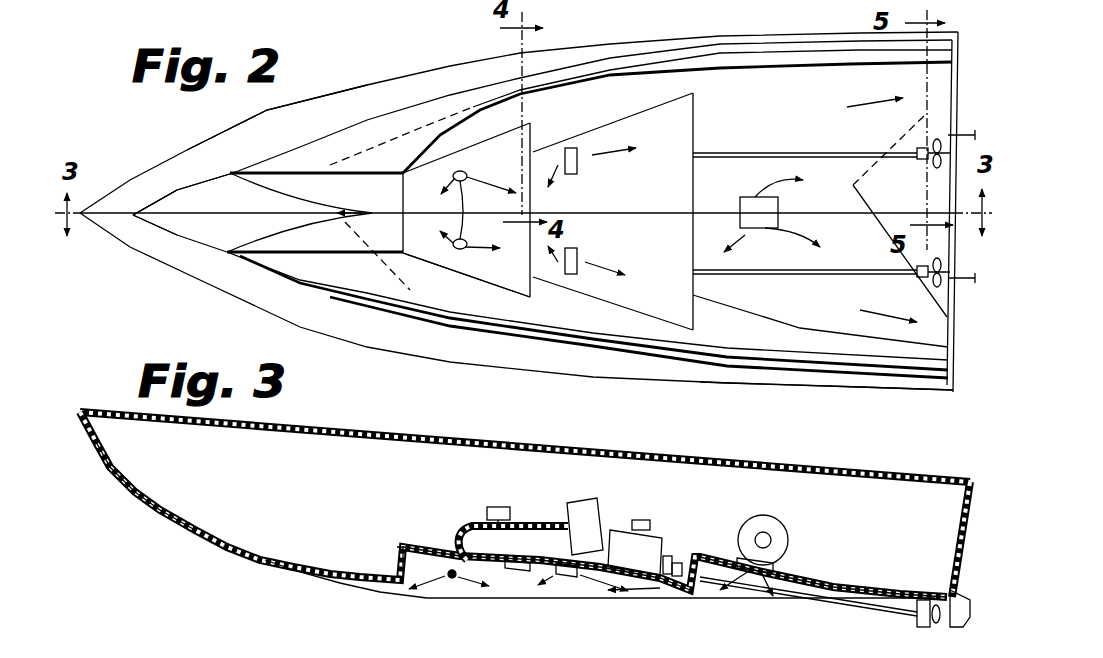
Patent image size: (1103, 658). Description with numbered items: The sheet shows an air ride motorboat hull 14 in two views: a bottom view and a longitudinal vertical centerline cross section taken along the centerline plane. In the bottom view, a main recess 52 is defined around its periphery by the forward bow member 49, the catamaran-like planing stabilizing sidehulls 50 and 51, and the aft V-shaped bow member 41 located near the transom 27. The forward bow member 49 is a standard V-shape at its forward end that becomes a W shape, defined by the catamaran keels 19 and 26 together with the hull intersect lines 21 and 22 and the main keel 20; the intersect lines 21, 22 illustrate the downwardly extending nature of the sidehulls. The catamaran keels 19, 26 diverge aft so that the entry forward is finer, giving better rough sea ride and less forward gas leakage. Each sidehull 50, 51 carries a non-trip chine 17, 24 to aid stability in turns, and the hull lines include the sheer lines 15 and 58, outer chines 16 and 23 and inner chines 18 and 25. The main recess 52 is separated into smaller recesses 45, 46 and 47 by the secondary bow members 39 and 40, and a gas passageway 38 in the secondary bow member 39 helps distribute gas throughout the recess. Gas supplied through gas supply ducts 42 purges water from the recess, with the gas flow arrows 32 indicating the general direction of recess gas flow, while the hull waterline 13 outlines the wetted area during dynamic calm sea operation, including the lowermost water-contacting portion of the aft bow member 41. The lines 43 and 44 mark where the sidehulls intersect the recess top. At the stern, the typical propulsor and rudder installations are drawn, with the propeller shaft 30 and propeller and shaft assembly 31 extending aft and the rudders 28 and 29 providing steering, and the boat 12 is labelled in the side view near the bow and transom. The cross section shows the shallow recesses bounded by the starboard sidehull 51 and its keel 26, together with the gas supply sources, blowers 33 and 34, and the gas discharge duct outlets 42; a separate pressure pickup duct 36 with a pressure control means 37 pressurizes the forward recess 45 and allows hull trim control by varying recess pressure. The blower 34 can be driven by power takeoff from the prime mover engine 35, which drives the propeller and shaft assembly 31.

In FIG. 3, the boat hull 12 is at (190, 548).
In FIG. 2, the hull waterline 13 is at (410, 290).
In FIG. 2, the hull 14 is at (313, 136).
In FIG. 2, the hull sheer line 15 is at (250, 120).
In FIG. 2, the outer chine 16 is at (177, 190).
In FIG. 2, the non-trip chine 17 is at (627, 65).
In FIG. 2, the inner chine 18 is at (603, 73).
In FIG. 2, the catamaran keel 19 is at (362, 162).
In FIG. 2, the main keel 20 is at (189, 212).
In FIG. 3, the main keel 20 is at (192, 535).
In FIG. 2, the hull intersect line 21 is at (295, 198).
In FIG. 2, the hull intersect line 22 is at (290, 225).
In FIG. 2, the outer chine 23 is at (200, 243).
In FIG. 2, the non-trip chine 24 is at (807, 377).
In FIG. 2, the inner chine 25 is at (840, 370).
In FIG. 3, the inner chine 25 is at (390, 598).
In FIG. 2, the catamaran sidehull keel 26 is at (290, 273).
In FIG. 2, the transom 27 is at (967, 110).
In FIG. 3, the transom 27 is at (972, 520).
In FIG. 2, the upper rudder 28 is at (974, 136).
In FIG. 2, the rudder 29 is at (973, 283).
In FIG. 3, the rudder 29 is at (956, 622).
In FIG. 2, the upper propeller shaft 30 is at (907, 153).
In FIG. 2, the propeller and shaft assembly 31 is at (920, 277).
In FIG. 3, the propeller and shaft assembly 31 is at (905, 616).
In FIG. 2, the gas flow arrows 32 is at (485, 255).
In FIG. 3, the gas flow arrows 32 is at (483, 592).
In FIG. 3, the blower 33 is at (785, 505).
In FIG. 3, the blower 34 is at (586, 510).
In FIG. 3, the prime mover engine 35 is at (648, 535).
In FIG. 3, the pressure pickup duct 36 is at (463, 530).
In FIG. 3, the pressure control means 37 is at (500, 507).
In FIG. 2, the gas passageway 38 is at (466, 215).
In FIG. 3, the gas passageway 38 is at (512, 572).
In FIG. 2, the secondary bow member 39 is at (507, 176).
In FIG. 3, the secondary bow member 39 is at (398, 553).
In FIG. 2, the secondary bow member 40 is at (650, 188).
In FIG. 3, the secondary bow member 40 is at (648, 590).
In FIG. 2, the aft bow member 41 is at (813, 311).
In FIG. 3, the aft bow member 41 is at (864, 597).
In FIG. 2, the gas supply duct 42 is at (580, 156).
In FIG. 3, the gas supply duct 42 is at (455, 585).
In FIG. 2, the sidehull intersect line 43 is at (487, 138).
In FIG. 2, the sidehull intersect line 44 is at (530, 297).
In FIG. 2, the forward recess 45 is at (433, 240).
In FIG. 3, the forward recess 45 is at (450, 585).
In FIG. 2, the recess 46 is at (650, 250).
In FIG. 3, the recess 46 is at (553, 576).
In FIG. 2, the recess 47 is at (813, 203).
In FIG. 2, the forward bow member 49 is at (213, 208).
In FIG. 3, the forward bow member 49 is at (343, 590).
In FIG. 2, the catamaran sidehull 50 is at (337, 171).
In FIG. 2, the catamaran sidehull 51 is at (343, 285).
In FIG. 2, the main recess 52 is at (600, 206).
In FIG. 2, the sheer 58 is at (720, 380).